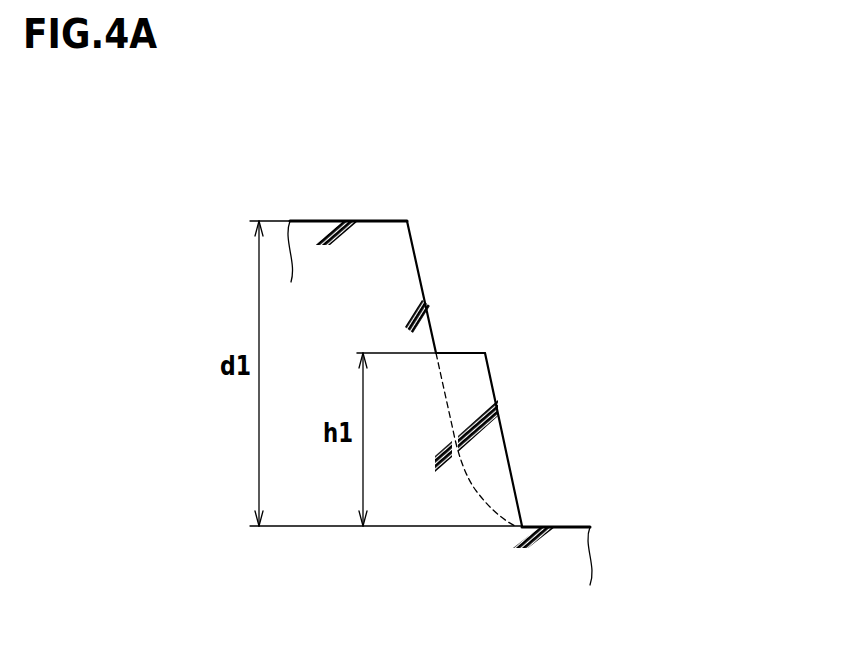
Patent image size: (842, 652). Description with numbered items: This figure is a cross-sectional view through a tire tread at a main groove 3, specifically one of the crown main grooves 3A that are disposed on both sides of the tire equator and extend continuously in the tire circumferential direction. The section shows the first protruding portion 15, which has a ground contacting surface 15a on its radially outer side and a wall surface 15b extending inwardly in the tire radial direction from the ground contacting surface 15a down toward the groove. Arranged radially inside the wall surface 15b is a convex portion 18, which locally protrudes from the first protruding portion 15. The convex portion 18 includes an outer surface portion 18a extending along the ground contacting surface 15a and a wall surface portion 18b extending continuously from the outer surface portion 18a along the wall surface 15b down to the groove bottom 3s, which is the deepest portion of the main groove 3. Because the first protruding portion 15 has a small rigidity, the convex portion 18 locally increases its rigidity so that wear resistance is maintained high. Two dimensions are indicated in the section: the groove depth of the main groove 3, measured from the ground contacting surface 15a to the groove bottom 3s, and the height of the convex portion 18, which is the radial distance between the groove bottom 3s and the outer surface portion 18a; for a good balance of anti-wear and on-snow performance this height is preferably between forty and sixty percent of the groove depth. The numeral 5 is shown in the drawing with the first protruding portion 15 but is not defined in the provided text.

The protrusion 5 is at (307, 220).
The first protruding portion 15 is at (387, 241).
The ground contacting surface 15a is at (372, 220).
The wall surface 15b is at (418, 252).
The convex portion 18 is at (470, 389).
The outer surface portion 18a is at (462, 352).
The wall surface portion 18b is at (507, 450).
The main groove 3 is at (536, 250).
The crown main groove 3A is at (590, 524).
The groove bottom 3s is at (570, 525).